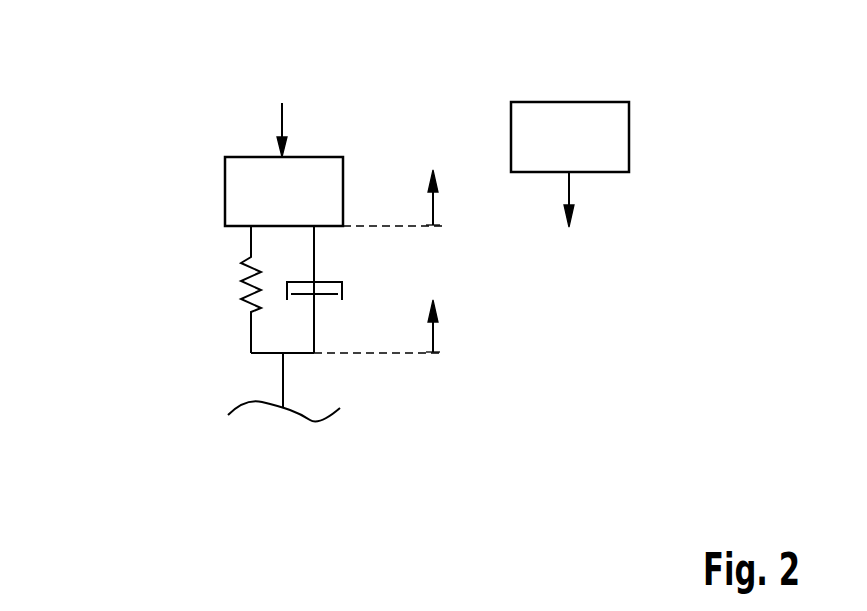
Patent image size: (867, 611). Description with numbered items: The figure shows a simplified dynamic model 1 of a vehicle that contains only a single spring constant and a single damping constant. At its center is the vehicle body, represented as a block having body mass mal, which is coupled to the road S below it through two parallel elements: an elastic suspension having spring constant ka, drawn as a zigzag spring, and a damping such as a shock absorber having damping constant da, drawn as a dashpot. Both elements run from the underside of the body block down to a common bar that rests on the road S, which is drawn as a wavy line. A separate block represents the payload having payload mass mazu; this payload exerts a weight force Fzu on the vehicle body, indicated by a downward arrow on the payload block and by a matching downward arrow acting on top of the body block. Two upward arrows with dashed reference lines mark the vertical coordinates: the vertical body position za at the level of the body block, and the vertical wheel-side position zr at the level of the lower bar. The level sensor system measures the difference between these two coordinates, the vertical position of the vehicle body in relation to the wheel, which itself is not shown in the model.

The simplified dynamic model 1 is at (94, 122).
The mass of vehicle body mal is at (284, 191).
The weight force Fzu is at (285, 124).
The vertical position of vehicle body za is at (435, 203).
The vertical position of wheel zr is at (435, 333).
The spring constant ka is at (242, 282).
The damping constant da is at (342, 292).
The road S is at (310, 420).
The mass of payload mazu is at (570, 137).